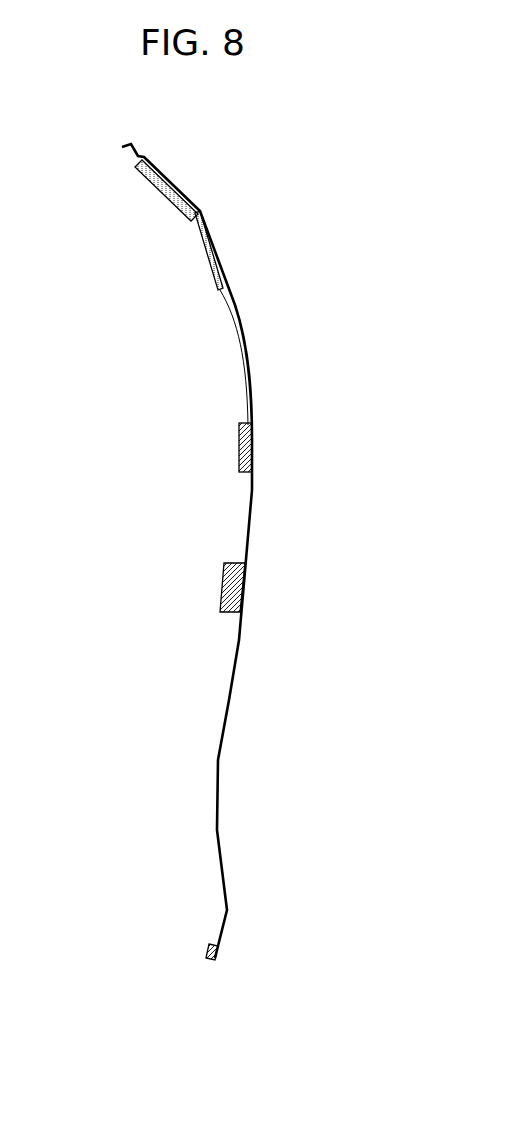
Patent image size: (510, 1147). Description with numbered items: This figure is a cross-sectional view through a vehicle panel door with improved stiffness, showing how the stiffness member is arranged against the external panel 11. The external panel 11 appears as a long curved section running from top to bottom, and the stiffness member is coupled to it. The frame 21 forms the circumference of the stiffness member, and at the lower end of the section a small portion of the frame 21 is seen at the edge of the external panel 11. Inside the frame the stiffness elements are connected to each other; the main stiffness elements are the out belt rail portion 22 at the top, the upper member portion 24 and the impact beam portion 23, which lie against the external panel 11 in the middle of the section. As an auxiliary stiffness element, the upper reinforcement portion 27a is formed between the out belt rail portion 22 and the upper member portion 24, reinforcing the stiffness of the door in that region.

The external panel 11 is at (250, 525).
The frame 21 is at (212, 945).
The out belt rail portion 22 is at (162, 195).
The impact beam portion 23 is at (220, 596).
The upper member portion 24 is at (238, 447).
The upper reinforcement portion 27a is at (242, 348).